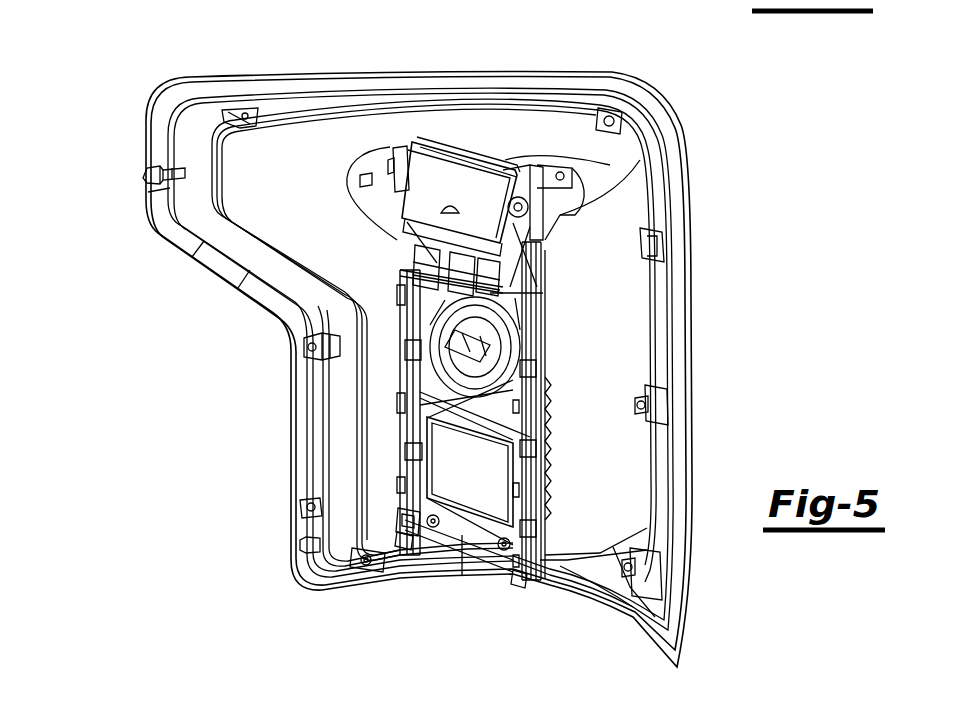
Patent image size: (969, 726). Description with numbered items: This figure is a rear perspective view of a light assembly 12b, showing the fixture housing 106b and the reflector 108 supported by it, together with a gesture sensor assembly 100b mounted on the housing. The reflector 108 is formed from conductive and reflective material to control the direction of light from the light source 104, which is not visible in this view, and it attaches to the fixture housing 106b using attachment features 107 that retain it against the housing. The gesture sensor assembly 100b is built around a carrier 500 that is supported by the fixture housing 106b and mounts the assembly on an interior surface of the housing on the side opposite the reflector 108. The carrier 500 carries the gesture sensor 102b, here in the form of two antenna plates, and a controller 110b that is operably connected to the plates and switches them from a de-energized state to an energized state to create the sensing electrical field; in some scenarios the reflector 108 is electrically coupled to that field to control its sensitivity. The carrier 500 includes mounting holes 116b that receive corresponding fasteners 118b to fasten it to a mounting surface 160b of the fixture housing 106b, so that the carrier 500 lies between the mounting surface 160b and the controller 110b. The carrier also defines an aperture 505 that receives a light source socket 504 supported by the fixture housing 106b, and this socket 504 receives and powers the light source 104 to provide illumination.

The light assembly 12b is at (150, 52).
The fixture housing 106b is at (305, 125).
The reflector 108 is at (147, 147).
The attachment features 107 is at (300, 347).
The mounting surface 160b is at (547, 317).
The gesture sensor assembly 100b is at (378, 146).
The controller 110b is at (422, 207).
The mounting holes 116b is at (406, 175).
The fasteners 118b is at (420, 512).
The carrier 500 is at (462, 550).
The light source socket 504 is at (506, 330).
The aperture 505 is at (533, 318).
The light source 104 is at (533, 378).
The gesture sensor 102b is at (403, 547).